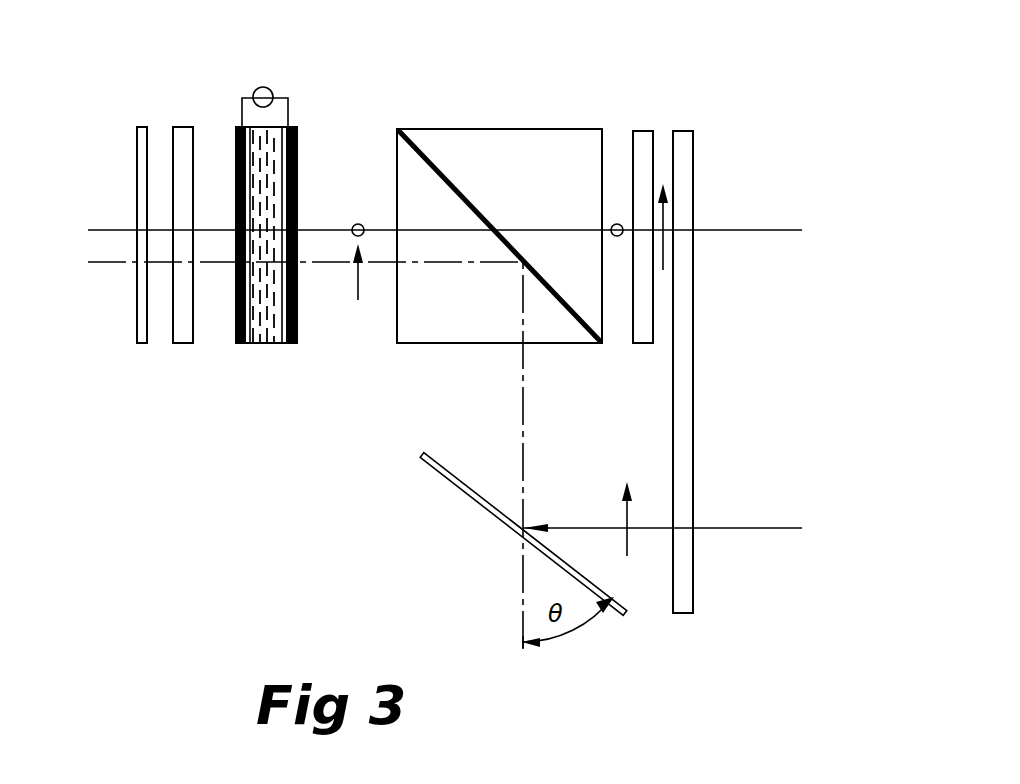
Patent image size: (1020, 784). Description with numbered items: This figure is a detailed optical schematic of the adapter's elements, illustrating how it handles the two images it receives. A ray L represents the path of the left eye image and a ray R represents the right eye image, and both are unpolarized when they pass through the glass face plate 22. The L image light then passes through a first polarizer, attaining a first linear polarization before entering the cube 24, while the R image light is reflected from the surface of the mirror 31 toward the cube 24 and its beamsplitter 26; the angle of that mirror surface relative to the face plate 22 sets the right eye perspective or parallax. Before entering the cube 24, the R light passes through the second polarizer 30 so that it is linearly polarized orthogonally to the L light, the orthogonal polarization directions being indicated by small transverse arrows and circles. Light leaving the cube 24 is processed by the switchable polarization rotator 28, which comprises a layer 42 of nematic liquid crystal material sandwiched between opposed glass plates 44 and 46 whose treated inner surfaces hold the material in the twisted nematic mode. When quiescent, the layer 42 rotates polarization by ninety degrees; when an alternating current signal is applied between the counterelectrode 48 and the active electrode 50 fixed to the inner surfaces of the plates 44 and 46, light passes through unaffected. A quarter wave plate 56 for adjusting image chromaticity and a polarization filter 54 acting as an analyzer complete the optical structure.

The glass face plate 22 is at (680, 131).
The cube 24 is at (497, 129).
The beamsplitter 26 is at (420, 152).
The switchable polarization rotator 28 is at (229, 269).
The second polarizer 30 is at (640, 131).
The mirror 31 is at (460, 480).
The layer of liquid crystal material 42 is at (260, 343).
The glass plate 44 is at (240, 343).
The glass plate 46 is at (283, 343).
The counterelectrode 48 is at (250, 142).
The active electrode 50 is at (288, 102).
The polarization filter 54 is at (140, 343).
The quarter wave plate 56 is at (183, 343).
The left eye image ray L is at (733, 230).
The right eye image ray R is at (717, 528).